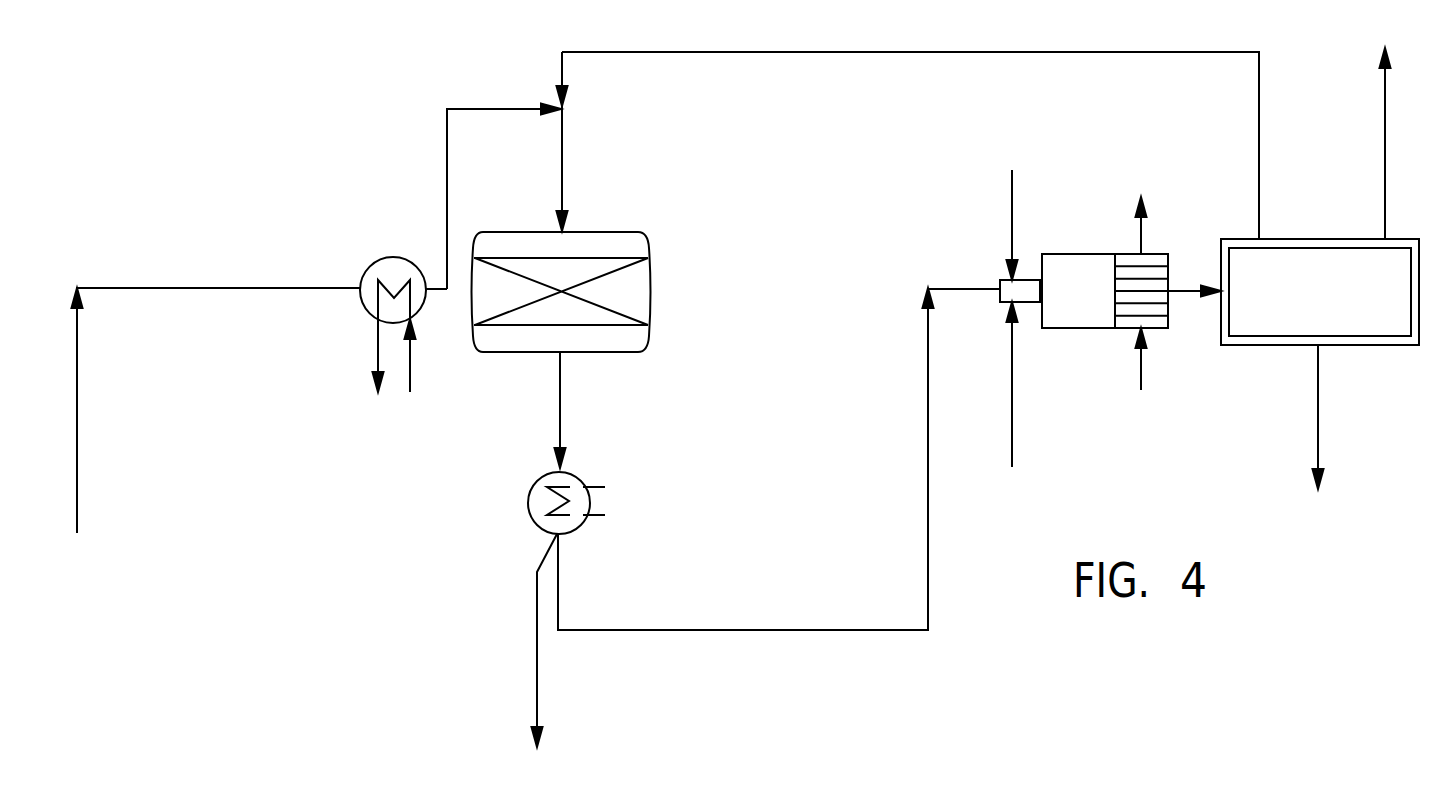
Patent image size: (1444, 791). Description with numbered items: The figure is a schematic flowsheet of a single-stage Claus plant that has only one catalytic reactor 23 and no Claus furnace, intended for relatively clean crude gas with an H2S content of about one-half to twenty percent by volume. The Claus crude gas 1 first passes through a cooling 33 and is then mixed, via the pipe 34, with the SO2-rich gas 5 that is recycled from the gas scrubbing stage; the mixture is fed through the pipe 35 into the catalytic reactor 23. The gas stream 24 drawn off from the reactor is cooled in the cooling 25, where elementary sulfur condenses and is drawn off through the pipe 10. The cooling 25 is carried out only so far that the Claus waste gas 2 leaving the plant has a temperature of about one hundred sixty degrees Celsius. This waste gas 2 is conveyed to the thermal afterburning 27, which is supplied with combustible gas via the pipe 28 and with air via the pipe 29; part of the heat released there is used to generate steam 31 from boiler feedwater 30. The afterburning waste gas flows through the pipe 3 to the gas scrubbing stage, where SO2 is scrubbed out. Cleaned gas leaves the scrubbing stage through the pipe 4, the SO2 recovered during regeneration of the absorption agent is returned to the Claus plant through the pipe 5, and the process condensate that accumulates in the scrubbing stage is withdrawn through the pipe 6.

The Claus crude gas 1 is at (77, 415).
The Claus waste gas 2 is at (732, 628).
The waste gas pipe from afterburning 3 is at (1182, 290).
The cleaned gas pipe 4 is at (1385, 150).
The SO2-rich gas recycle pipe 5 is at (1259, 138).
The process condensate pipe 6 is at (1318, 408).
The elementary sulfur pipe 10 is at (534, 637).
The catalytic reactor 23 is at (650, 286).
The reactor gas stream 24 is at (560, 410).
The cooling 25 is at (532, 490).
The thermal afterburning 27 is at (1054, 307).
The combustible gas pipe 28 is at (1012, 425).
The air pipe 29 is at (1012, 217).
The boiler feedwater 30 is at (1137, 374).
The steam 31 is at (1137, 209).
The cooling of crude gas 33 is at (375, 263).
The cooled crude gas pipe 34 is at (447, 163).
The reactor feed pipe 35 is at (562, 155).